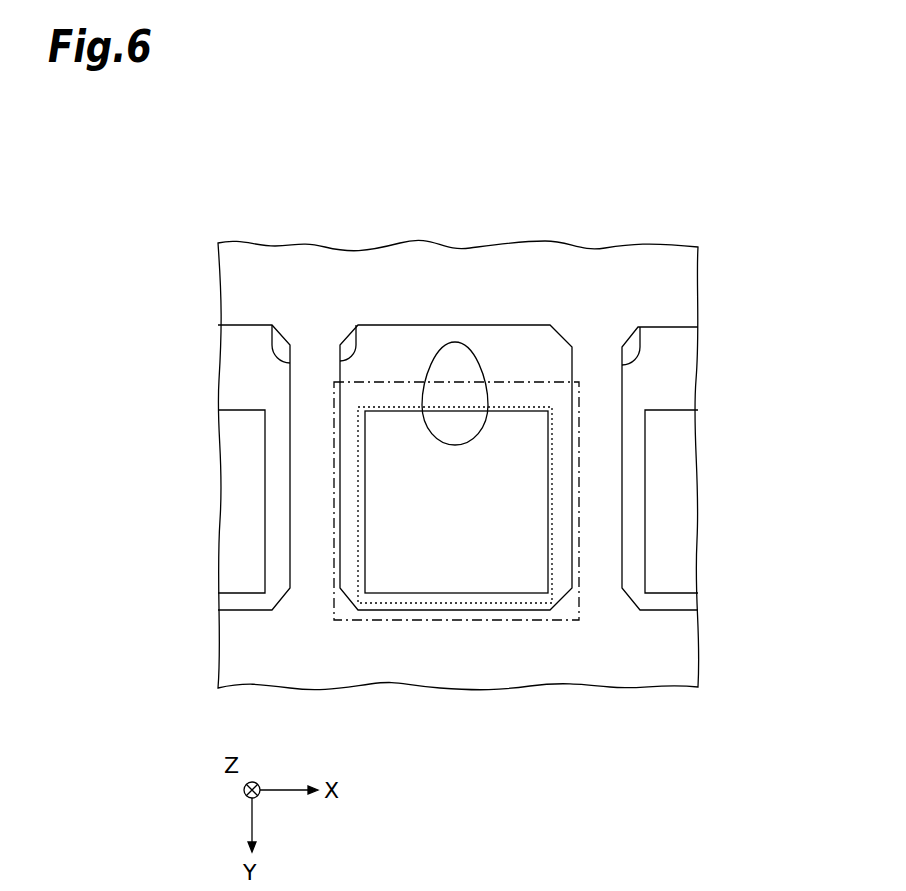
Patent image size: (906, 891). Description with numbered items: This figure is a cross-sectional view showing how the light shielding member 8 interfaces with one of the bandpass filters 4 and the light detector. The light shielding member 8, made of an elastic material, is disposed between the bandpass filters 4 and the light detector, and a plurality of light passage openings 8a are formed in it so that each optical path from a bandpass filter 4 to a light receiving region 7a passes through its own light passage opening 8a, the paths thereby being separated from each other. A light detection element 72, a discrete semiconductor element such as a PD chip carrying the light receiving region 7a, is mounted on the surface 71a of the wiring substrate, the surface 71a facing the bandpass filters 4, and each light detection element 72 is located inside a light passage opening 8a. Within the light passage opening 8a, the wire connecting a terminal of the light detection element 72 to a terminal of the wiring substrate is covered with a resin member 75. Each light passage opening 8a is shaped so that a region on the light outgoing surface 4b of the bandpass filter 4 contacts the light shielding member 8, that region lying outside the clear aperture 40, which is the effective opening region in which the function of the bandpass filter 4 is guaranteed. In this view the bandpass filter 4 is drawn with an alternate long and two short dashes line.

The light shielding member 8 is at (414, 262).
The light passage opening 8a is at (272, 330).
The surface 71a is at (673, 370).
The light detection element 72 is at (673, 492).
The resin member 75 is at (455, 358).
The light receiving region 7a is at (468, 519).
The bandpass filter 4 is at (458, 620).
The clear aperture 40 is at (515, 603).
The light outgoing surface 4b is at (400, 563).